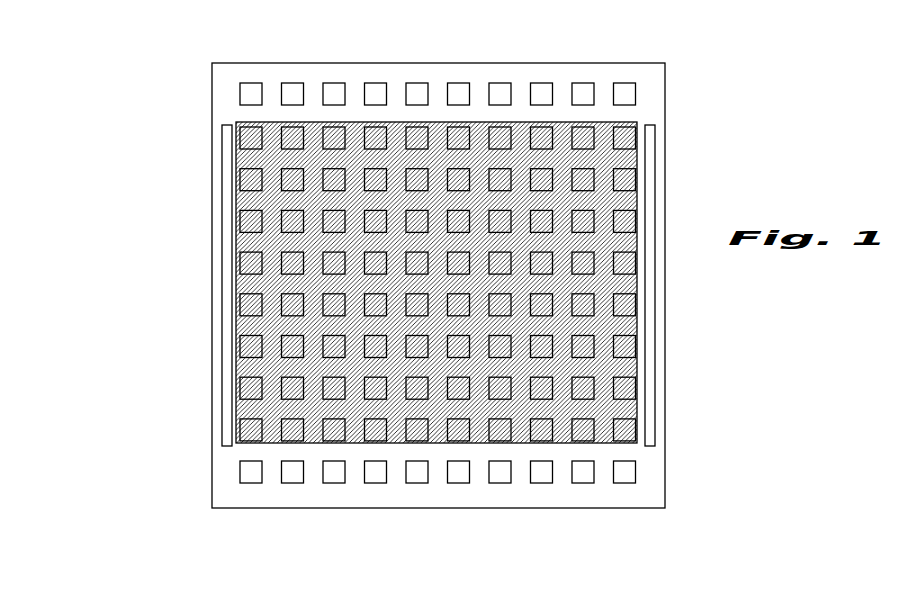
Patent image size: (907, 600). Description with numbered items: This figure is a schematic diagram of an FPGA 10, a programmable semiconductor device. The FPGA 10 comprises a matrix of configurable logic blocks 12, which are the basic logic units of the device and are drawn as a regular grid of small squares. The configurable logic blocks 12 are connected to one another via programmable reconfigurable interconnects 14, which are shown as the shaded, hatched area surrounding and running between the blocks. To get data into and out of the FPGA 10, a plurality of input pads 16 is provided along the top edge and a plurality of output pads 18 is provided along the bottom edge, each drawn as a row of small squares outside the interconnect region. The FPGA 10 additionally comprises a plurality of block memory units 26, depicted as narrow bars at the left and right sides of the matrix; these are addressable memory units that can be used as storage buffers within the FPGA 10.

The FPGA 10 is at (665, 63).
The configurable logic blocks 12 is at (252, 173).
The programmable reconfigurable interconnects 14 is at (239, 238).
The input pads 16 is at (292, 100).
The output pads 18 is at (292, 472).
The block memory units 26 is at (228, 268).